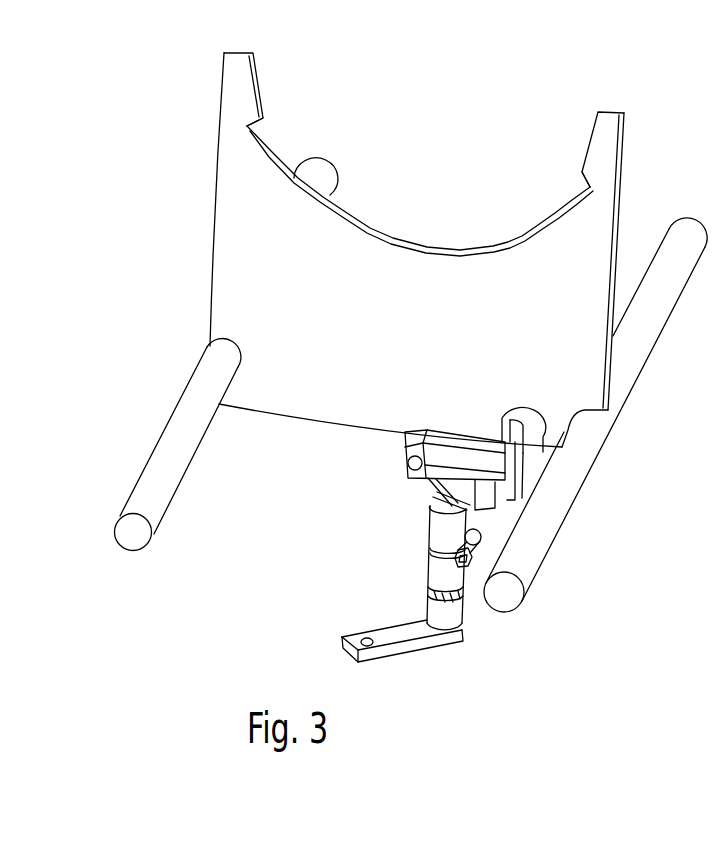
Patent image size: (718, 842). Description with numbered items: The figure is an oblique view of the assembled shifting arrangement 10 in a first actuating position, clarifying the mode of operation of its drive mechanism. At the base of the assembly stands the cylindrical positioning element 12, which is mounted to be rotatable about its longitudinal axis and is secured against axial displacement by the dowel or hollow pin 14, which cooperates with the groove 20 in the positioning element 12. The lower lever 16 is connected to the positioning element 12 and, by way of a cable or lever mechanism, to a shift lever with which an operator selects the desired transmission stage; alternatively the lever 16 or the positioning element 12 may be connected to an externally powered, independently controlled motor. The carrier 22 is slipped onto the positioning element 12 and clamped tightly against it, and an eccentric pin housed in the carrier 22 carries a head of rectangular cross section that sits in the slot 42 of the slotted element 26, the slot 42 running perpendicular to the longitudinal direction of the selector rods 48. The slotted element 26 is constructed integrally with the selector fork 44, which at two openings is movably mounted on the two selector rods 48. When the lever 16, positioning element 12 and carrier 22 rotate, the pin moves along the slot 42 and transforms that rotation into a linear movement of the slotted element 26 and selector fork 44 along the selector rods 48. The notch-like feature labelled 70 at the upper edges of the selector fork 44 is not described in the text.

The shifting arrangement 10 is at (575, 587).
The positioning element 12 is at (467, 617).
The hollow pin 14 is at (482, 534).
The lower lever 16 is at (381, 636).
The groove 20 is at (430, 552).
The carrier 22 is at (405, 487).
The slotted element 26 is at (405, 450).
The slot 42 is at (543, 446).
The selector fork 44 is at (433, 290).
The selector rods 48 is at (207, 377).
The notch 70 is at (264, 116).